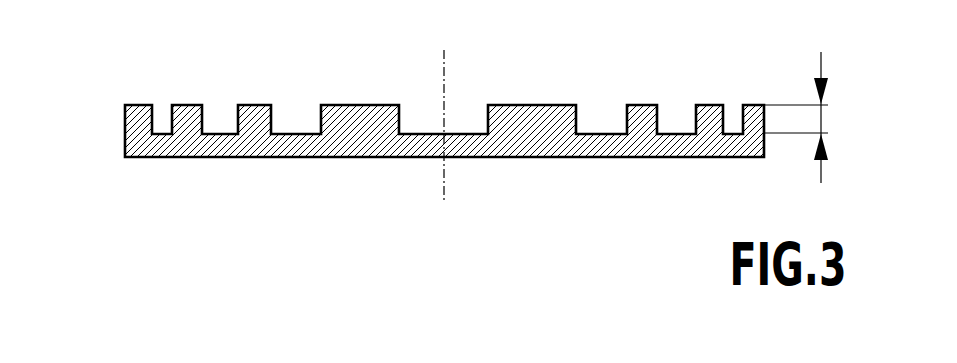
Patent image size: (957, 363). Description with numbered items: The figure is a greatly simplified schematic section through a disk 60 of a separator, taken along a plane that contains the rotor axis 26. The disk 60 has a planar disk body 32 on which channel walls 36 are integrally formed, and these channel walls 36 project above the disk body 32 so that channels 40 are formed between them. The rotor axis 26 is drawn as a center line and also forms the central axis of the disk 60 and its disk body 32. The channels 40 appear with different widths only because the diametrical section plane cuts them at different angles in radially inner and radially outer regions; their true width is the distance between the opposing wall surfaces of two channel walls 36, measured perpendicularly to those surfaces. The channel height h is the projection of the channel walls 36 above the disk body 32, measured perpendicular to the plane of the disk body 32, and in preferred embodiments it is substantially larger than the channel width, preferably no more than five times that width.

The disk 60 is at (104, 112).
The disk body 32 is at (468, 142).
The rotor axis 26 is at (445, 103).
The channel walls 36 is at (133, 120).
The channels 40 is at (163, 113).
The channel height h is at (821, 119).